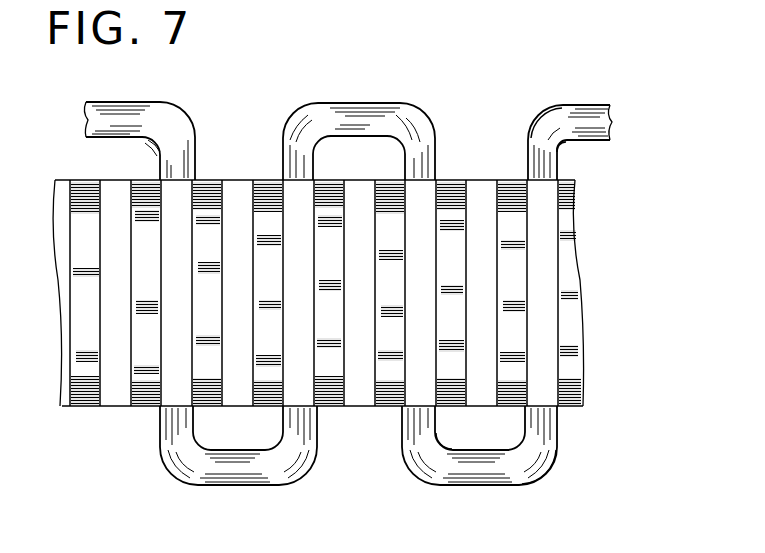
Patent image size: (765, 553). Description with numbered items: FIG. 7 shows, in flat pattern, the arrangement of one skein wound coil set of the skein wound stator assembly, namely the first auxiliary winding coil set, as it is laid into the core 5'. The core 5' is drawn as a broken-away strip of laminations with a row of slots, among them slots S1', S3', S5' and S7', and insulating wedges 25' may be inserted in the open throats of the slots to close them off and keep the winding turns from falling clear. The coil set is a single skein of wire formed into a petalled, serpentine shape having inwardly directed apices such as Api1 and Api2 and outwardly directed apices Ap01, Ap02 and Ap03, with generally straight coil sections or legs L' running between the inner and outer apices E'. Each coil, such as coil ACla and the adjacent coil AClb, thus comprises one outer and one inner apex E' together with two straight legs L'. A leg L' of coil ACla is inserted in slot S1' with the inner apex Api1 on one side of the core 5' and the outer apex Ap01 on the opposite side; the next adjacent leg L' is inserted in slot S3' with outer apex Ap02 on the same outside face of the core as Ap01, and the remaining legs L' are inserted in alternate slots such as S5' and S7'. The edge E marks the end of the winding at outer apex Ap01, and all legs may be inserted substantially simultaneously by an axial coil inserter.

The core 5' is at (356, 295).
The insulating wedge 25' is at (354, 293).
The outer apex Ap03 is at (157, 103).
The outer apex Ap02 is at (398, 103).
The outer apex Ap01 is at (585, 105).
The edge of loop E is at (531, 115).
The leg L' is at (489, 301).
The lower connecting loop AClb is at (172, 483).
The coil ACla is at (550, 472).
The inner apex Api2 is at (282, 487).
The inner apex Api1 is at (450, 490).
The stator slot S7' is at (177, 464).
The stator slot S5' is at (294, 464).
The stator slot S3' is at (422, 464).
The stator slot S1' is at (546, 459).
The apex E' is at (581, 455).